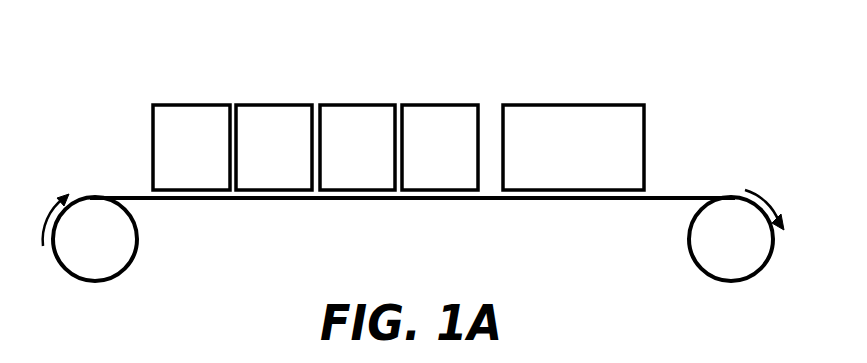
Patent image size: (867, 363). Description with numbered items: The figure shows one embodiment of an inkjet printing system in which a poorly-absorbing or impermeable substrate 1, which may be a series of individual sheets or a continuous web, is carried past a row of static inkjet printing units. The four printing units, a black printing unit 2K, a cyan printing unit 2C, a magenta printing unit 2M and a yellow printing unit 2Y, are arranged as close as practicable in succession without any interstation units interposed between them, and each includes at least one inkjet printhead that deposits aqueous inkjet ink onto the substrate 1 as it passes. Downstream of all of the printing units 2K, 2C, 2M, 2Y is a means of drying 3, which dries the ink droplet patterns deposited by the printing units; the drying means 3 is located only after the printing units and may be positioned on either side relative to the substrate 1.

The substrate 1 is at (91, 197).
The black printing unit 2K is at (192, 105).
The cyan printing unit 2C is at (270, 105).
The magenta printing unit 2M is at (359, 105).
The yellow printing unit 2Y is at (441, 105).
The means of drying 3 is at (573, 105).